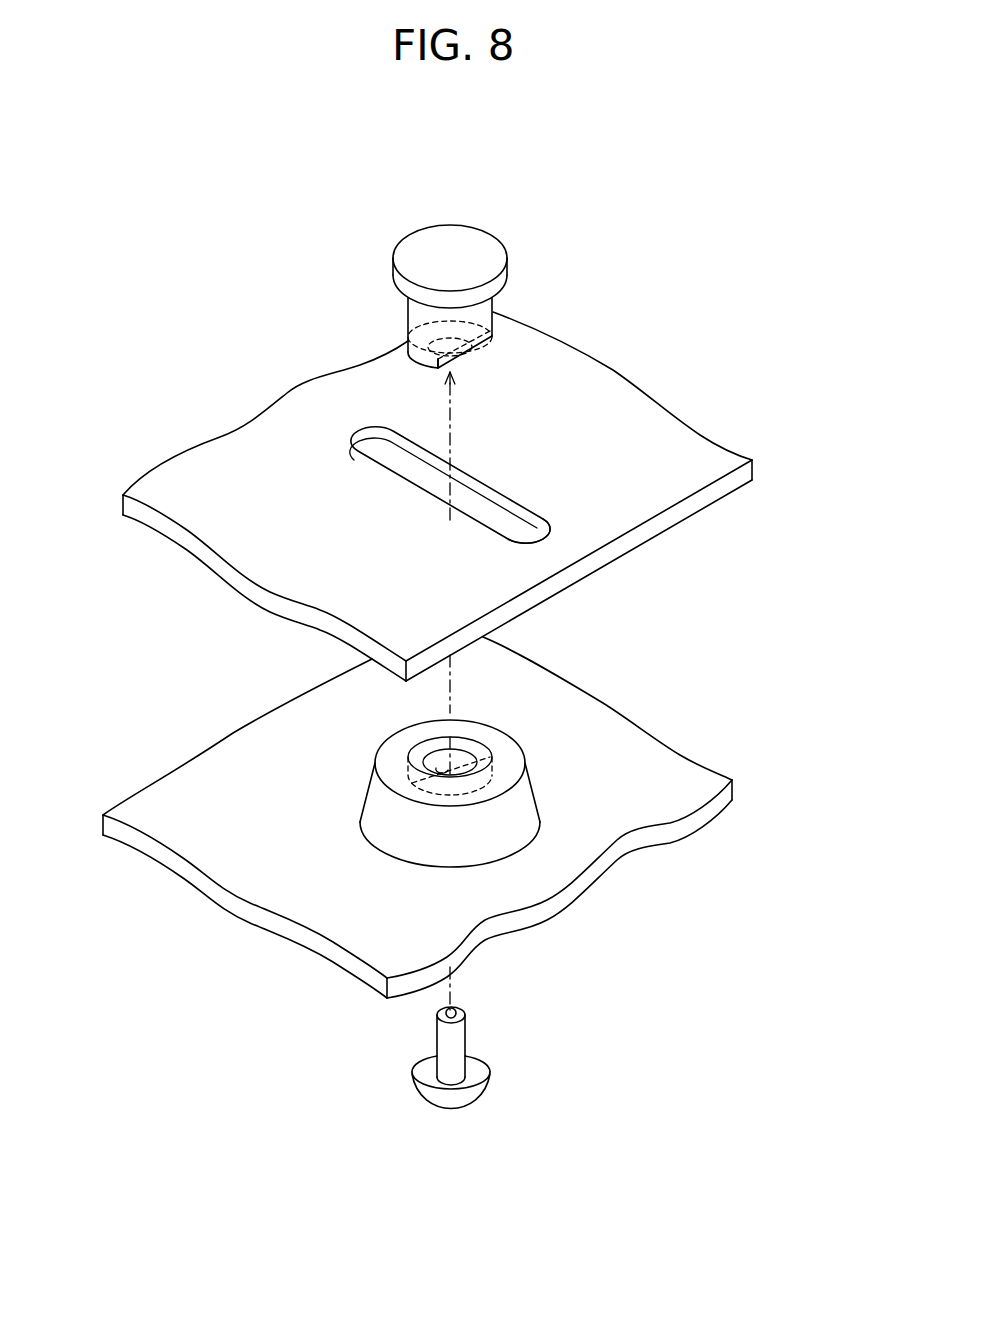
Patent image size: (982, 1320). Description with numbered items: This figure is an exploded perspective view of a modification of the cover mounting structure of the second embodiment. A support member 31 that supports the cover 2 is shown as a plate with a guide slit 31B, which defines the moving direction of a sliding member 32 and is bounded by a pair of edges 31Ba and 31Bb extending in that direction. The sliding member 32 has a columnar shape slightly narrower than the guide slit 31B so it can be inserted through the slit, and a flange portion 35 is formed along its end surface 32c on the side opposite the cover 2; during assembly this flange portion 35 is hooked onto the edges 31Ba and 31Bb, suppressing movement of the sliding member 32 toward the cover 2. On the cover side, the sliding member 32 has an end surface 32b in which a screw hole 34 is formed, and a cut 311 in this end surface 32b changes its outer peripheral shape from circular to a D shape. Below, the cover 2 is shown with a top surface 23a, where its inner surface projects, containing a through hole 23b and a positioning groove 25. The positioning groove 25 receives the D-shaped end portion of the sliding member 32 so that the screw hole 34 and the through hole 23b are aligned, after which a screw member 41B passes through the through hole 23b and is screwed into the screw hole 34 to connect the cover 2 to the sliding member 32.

The cover 2 is at (256, 874).
The positioning groove 25 is at (420, 748).
The top surface 23a is at (500, 772).
The through hole 23b is at (453, 770).
The support member 31 is at (715, 457).
The guide slit 31B is at (547, 516).
The edge of guide slit 31Ba is at (467, 537).
The edge of guide slit 31Bb is at (528, 522).
The cut 311 is at (482, 358).
The sliding member 32 is at (420, 286).
The end surface 32b is at (430, 368).
The end surface 32c is at (468, 253).
The screw hole 34 is at (436, 347).
The flange portion 35 is at (506, 242).
The screw member 41B is at (458, 1042).